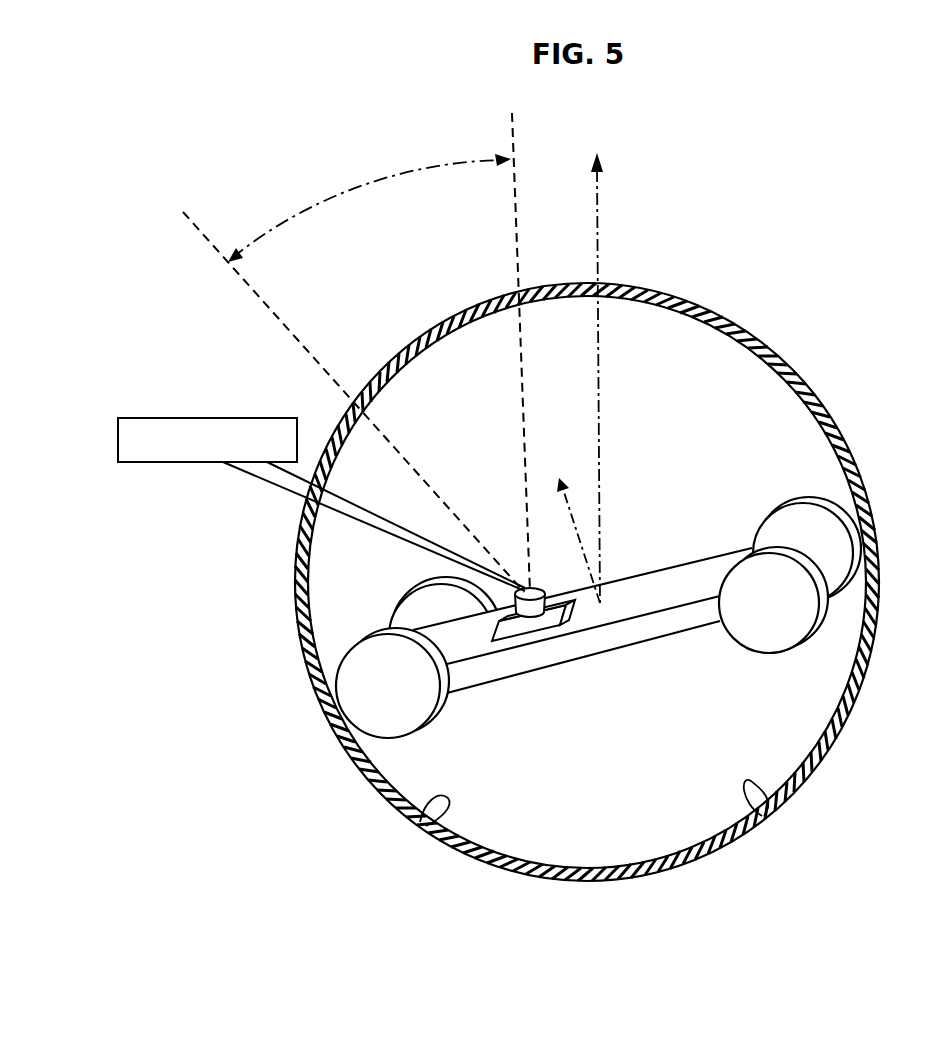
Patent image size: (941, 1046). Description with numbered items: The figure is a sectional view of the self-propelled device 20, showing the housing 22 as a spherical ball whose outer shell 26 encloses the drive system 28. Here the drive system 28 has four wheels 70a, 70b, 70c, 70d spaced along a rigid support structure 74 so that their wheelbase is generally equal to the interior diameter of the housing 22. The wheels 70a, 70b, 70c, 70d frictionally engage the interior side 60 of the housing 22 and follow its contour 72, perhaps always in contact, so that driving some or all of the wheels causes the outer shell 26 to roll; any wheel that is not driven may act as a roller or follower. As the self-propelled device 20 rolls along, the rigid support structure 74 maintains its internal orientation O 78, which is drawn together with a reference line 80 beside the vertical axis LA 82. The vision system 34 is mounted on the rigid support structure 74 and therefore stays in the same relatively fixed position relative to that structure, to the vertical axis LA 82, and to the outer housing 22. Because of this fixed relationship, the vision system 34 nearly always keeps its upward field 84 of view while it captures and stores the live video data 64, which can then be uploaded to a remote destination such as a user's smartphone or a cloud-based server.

The self-propelled device 20 is at (803, 378).
The housing 22 is at (840, 427).
The outer shell 26 is at (860, 688).
The drive system 28 is at (535, 598).
The vision system 34 is at (542, 635).
The interior side 60 is at (430, 812).
The live video data 64 is at (118, 440).
The drive wheel 70a is at (422, 730).
The drive wheel 70b is at (402, 606).
The wheel 70c is at (773, 658).
The wheel 70d is at (793, 500).
The contour 72 is at (752, 796).
The rigid support structure 74 is at (672, 640).
The internal orientation O 78 is at (553, 457).
The vertical axis 80 is at (593, 525).
The vertical axis LA 82 is at (642, 155).
The upward field of view 84 is at (338, 178).